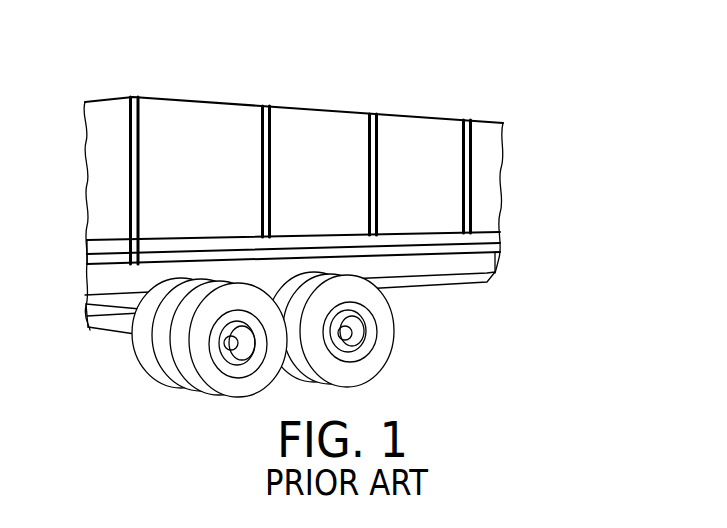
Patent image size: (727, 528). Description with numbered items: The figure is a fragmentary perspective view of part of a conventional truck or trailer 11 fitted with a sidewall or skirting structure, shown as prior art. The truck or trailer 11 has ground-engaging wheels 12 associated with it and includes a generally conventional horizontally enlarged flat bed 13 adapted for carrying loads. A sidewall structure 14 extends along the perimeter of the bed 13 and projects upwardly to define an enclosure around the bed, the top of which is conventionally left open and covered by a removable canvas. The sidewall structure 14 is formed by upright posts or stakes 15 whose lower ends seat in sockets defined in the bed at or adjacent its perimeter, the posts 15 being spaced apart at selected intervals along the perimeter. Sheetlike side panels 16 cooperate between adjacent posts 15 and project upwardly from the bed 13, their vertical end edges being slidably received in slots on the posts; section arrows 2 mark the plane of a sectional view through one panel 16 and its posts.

The truck or trailer 11 is at (515, 138).
The ground-engaging wheels 12 is at (387, 345).
The flat bed 13 is at (481, 238).
The sidewall structure 14 is at (415, 116).
The upright posts or stakes 15 is at (267, 108).
The side panels 16 is at (183, 118).
The section line 2- 2 is at (400, 172).